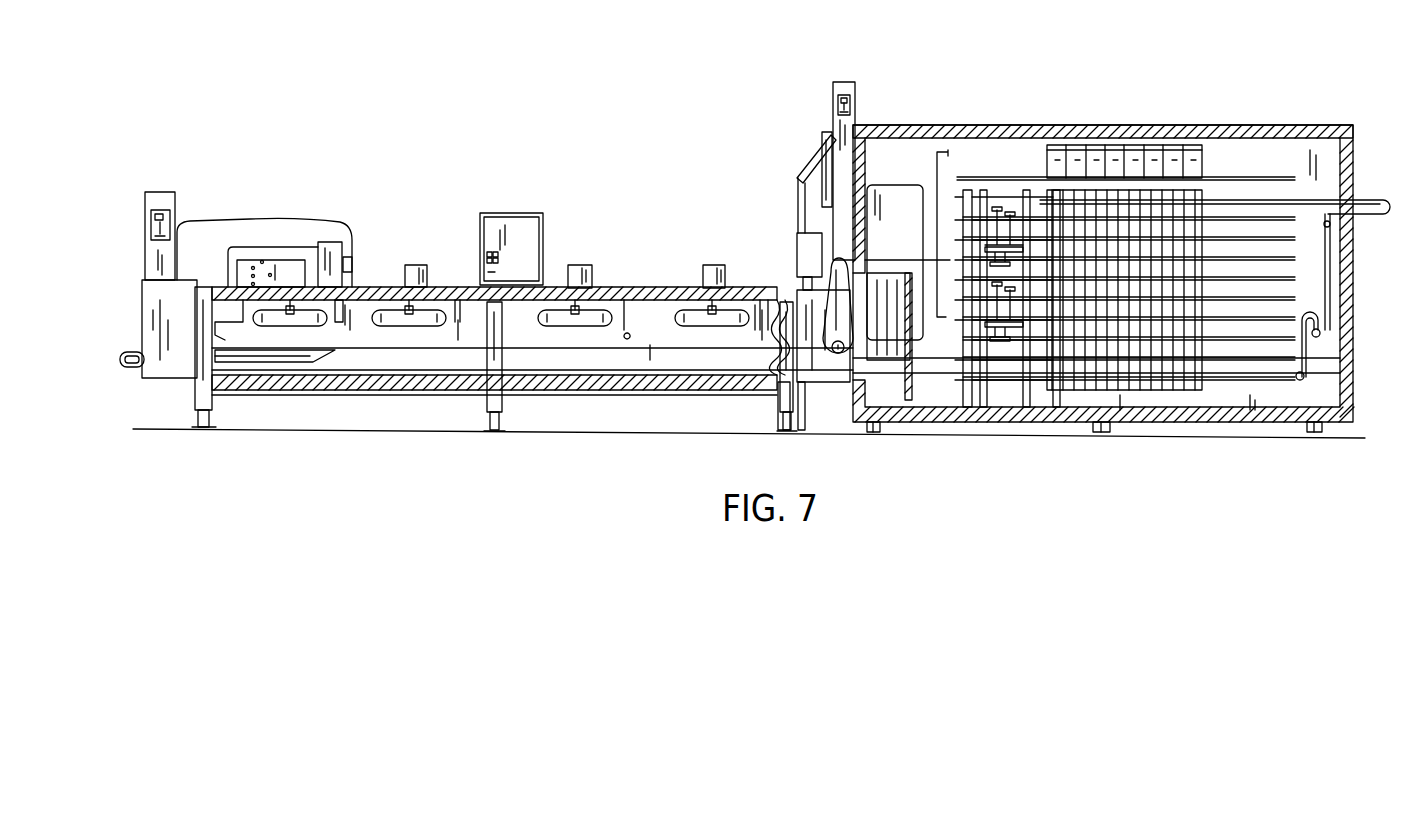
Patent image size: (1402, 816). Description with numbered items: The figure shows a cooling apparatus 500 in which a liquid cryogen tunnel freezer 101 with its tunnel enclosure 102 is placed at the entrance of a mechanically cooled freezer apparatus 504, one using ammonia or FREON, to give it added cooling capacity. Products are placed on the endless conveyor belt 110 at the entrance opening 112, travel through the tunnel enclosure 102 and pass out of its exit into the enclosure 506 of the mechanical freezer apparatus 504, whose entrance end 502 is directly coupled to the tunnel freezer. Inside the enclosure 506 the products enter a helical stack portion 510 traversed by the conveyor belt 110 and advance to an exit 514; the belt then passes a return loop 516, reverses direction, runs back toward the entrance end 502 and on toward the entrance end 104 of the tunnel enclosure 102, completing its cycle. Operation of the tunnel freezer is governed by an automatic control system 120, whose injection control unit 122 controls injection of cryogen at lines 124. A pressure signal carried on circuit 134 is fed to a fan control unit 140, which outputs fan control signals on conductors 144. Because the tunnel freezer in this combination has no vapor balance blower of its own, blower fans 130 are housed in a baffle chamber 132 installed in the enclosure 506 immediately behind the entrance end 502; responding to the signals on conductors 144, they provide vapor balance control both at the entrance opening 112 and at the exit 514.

The freezer 101 is at (632, 250).
The tunnel enclosure 102 is at (637, 292).
The entrance end 104 is at (137, 294).
The endless conveyor belt 110 is at (612, 350).
The entrance opening 112 is at (136, 345).
The automatic control system 120 is at (362, 261).
The injection control unit 122 is at (281, 262).
The cryogen lines 124 is at (225, 338).
The blower fans 130 is at (963, 340).
The baffle chamber 132 is at (882, 262).
The circuit 134 is at (210, 220).
The fan control unit 140 is at (330, 245).
The conductors 144 is at (945, 182).
The cooling apparatus 500 is at (878, 86).
The entrance end 502 is at (813, 172).
The mechanical freezer apparatus 504 is at (1082, 112).
The enclosure 506 is at (950, 128).
The helical stack portion 510 is at (1208, 192).
The exit 514 is at (1345, 168).
The return loop 516 is at (1300, 362).